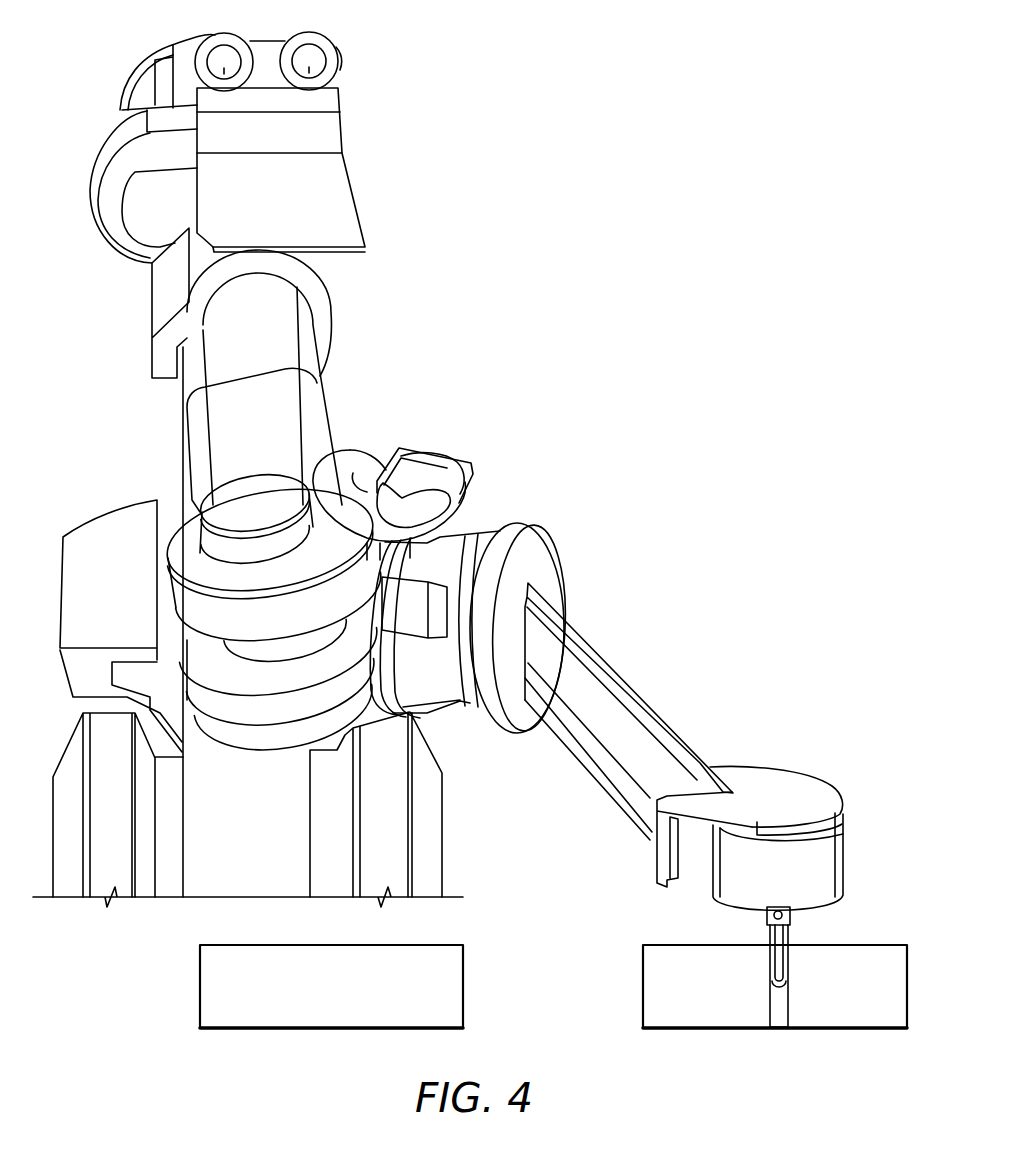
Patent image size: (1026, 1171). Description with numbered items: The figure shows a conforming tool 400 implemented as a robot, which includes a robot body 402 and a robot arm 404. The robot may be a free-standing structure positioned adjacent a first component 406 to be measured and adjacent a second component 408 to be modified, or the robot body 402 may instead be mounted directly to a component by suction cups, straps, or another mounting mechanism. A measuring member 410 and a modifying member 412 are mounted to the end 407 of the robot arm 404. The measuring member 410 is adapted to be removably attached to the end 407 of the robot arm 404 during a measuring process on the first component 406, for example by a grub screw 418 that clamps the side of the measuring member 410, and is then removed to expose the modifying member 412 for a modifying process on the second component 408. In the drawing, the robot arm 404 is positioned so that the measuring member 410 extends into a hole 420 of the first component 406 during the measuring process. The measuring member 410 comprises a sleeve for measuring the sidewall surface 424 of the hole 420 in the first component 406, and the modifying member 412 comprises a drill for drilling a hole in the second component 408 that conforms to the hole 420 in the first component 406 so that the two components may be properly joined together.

The conforming tool 400 is at (449, 553).
The robot body 402 is at (150, 62).
The robot arm 404 is at (472, 536).
The first component 406 is at (643, 985).
The end of robot arm 407 is at (795, 775).
The second component 408 is at (200, 985).
The measuring member 410 is at (777, 1003).
The modifying member 412 is at (770, 957).
The grub screw 418 is at (767, 916).
The hole 420 is at (789, 995).
The sidewall surface 424 is at (780, 1016).